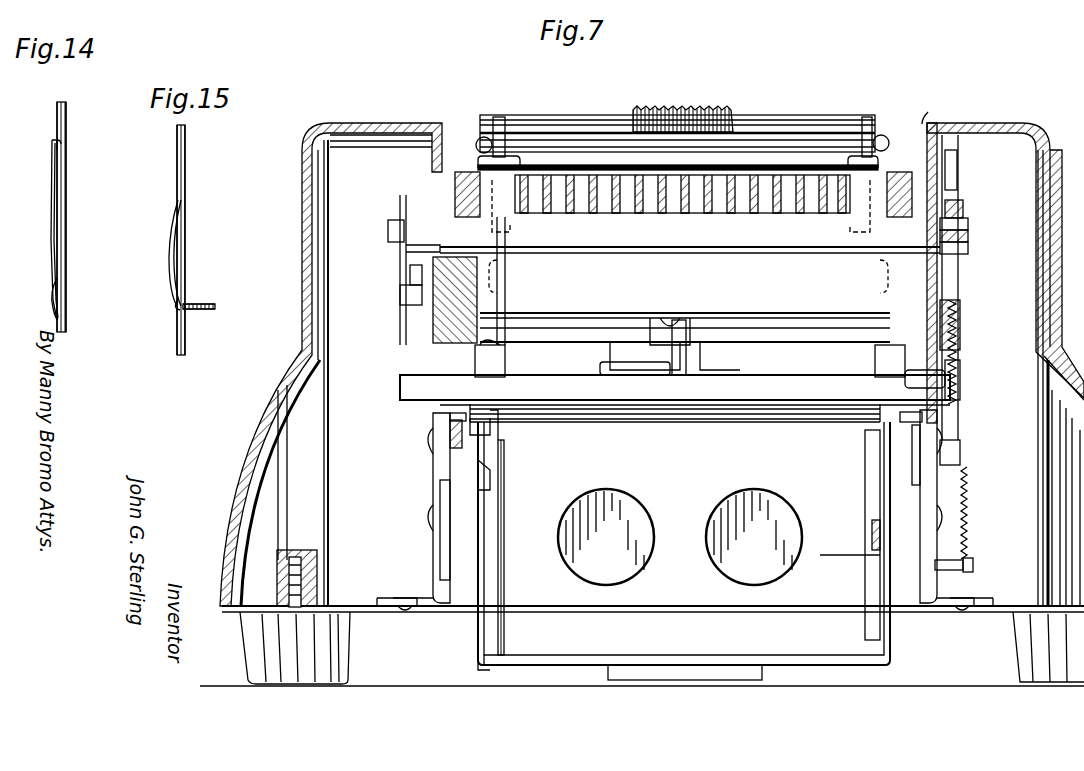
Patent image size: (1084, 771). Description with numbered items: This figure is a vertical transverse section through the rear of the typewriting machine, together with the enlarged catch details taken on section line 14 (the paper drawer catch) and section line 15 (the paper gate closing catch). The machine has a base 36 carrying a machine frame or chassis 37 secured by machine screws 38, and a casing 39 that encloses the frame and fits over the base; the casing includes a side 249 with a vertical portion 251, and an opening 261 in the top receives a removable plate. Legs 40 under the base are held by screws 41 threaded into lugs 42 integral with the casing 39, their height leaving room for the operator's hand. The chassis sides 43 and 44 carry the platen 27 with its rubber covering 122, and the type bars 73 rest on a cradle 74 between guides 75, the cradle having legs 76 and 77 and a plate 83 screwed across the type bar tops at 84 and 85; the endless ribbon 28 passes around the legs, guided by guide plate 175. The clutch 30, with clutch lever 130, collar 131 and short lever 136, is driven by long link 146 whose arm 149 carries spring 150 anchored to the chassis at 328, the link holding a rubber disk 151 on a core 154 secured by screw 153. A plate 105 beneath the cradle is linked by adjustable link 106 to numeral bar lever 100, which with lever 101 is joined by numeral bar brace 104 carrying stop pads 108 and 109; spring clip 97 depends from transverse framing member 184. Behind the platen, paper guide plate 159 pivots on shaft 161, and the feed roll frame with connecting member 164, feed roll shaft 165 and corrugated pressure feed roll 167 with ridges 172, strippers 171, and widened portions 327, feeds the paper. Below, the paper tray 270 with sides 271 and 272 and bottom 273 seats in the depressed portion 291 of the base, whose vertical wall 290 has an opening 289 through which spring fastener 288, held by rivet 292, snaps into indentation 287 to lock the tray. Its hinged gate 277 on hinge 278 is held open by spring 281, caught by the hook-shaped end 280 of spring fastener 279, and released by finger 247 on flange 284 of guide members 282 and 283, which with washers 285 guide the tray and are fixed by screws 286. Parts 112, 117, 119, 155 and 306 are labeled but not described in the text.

In FIG. 7, the section line 14 is at (517, 618).
In FIG. 7, the section line 15 is at (460, 500).
In FIG. 7, the platen 27 is at (775, 130).
In FIG. 7, the inked ribbon 28 is at (455, 182).
In FIG. 7, the clutch 30 is at (1025, 133).
In FIG. 7, the base 36 is at (232, 612).
In FIG. 7, the machine frame or chassis 37 is at (955, 490).
In FIG. 7, the machine screws 38 is at (400, 612).
In FIG. 7, the casing 39 is at (324, 131).
In FIG. 7, the legs 40 is at (248, 665).
In FIG. 7, the screws 41 is at (301, 580).
In FIG. 7, the lugs 42 is at (300, 532).
In FIG. 7, the side of the chassis 43 is at (932, 475).
In FIG. 7, the side of the chassis 44 is at (438, 497).
In FIG. 7, the type bar 73 is at (682, 213).
In FIG. 7, the cradle 74 is at (652, 243).
In FIG. 7, the guides 75 is at (580, 213).
In FIG. 7, the leg of the cradle 76 is at (900, 172).
In FIG. 7, the leg of the cradle 77 is at (470, 172).
In FIG. 7, the plate 83 is at (590, 165).
In FIG. 7, the screw 84 is at (867, 156).
In FIG. 7, the screw 85 is at (500, 156).
In FIG. 7, the spring clip 97 is at (678, 403).
In FIG. 7, the numeral bar lever 100 is at (395, 288).
In FIG. 7, the numeral bar lever 101 is at (960, 347).
In FIG. 7, the numeral bar brace 104 is at (400, 396).
In FIG. 7, the plate 105 is at (614, 253).
In FIG. 7, the link 106 is at (400, 250).
In FIG. 7, the adjustable stop pad 108 is at (500, 345).
In FIG. 7, the adjustable stop pad 109 is at (880, 345).
In FIG. 7, the nut 112 is at (945, 380).
In FIG. 7, the collar 117 is at (960, 395).
In FIG. 7, the thread 119 is at (960, 329).
In FIG. 7, the rubber covering 122 is at (810, 138).
In FIG. 7, the clutch lever 130 is at (960, 150).
In FIG. 7, the collar 131 is at (940, 135).
In FIG. 7, the short lever 136 is at (962, 180).
In FIG. 7, the long link 146 is at (965, 215).
In FIG. 7, the downwardly projecting arm 149 is at (968, 280).
In FIG. 7, the spring 150 is at (960, 311).
In FIG. 7, the rubber disk 151 is at (959, 223).
In FIG. 7, the screw 153 is at (968, 265).
In FIG. 7, the core 154 is at (968, 250).
In FIG. 7, the washer 155 is at (968, 236).
In FIG. 7, the paper guide plate 159 is at (745, 420).
In FIG. 7, the shaft 161 is at (712, 328).
In FIG. 7, the connecting member 164 is at (740, 120).
In FIG. 7, the feed roll shaft 165 is at (560, 130).
In FIG. 7, the pressure feed roll 167 is at (695, 112).
In FIG. 7, the stripper 171 is at (512, 234).
In FIG. 7, the ridges 172 is at (657, 110).
In FIG. 7, the guide plate 175 is at (447, 172).
In FIG. 7, the transverse framing member 184 is at (695, 297).
In FIG. 7, the finger 247 is at (490, 439).
In FIG. 7, the side of the casing 249 is at (250, 436).
In FIG. 7, the vertical portion 251 is at (318, 308).
In FIG. 7, the opening 261 is at (943, 106).
In FIG. 7, the paper tray 270 is at (600, 643).
In FIG. 15, the side of the tray 271 is at (186, 150).
In FIG. 7, the side of the tray 271 is at (495, 577).
In FIG. 7, the side of the tray 272 is at (870, 600).
In FIG. 7, the bottom of the tray 273 is at (775, 645).
In FIG. 15, the hinged gate 277 is at (210, 304).
In FIG. 7, the hinged gate 277 is at (700, 502).
In FIG. 7, the gate hinge 278 is at (868, 486).
In FIG. 15, the spring fastener 279 is at (181, 225).
In FIG. 15, the hook-shaped end 280 is at (175, 308).
In FIG. 7, the hook-shaped end 280 is at (492, 480).
In FIG. 7, the spring 281 is at (842, 560).
In FIG. 7, the guide member 282 is at (433, 483).
In FIG. 7, the guide member 283 is at (930, 492).
In FIG. 7, the flange 284 is at (450, 415).
In FIG. 7, the washers 285 is at (450, 435).
In FIG. 7, the machine screws 286 is at (428, 445).
In FIG. 14, the indentation 287 is at (60, 142).
In FIG. 7, the indentation 287 is at (498, 660).
In FIG. 14, the spring fastener 288 is at (52, 170).
In FIG. 7, the spring fastener 288 is at (478, 660).
In FIG. 14, the opening 289 is at (57, 125).
In FIG. 14, the vertical wall 290 is at (66, 104).
In FIG. 7, the vertical wall 290 is at (483, 668).
In FIG. 7, the depressed portion 291 is at (818, 665).
In FIG. 14, the rivet 292 is at (55, 276).
In FIG. 7, the tab 306 is at (685, 680).
In FIG. 7, the widened portion 327 is at (505, 275).
In FIG. 7, the spring anchorage on chassis 328 is at (973, 568).